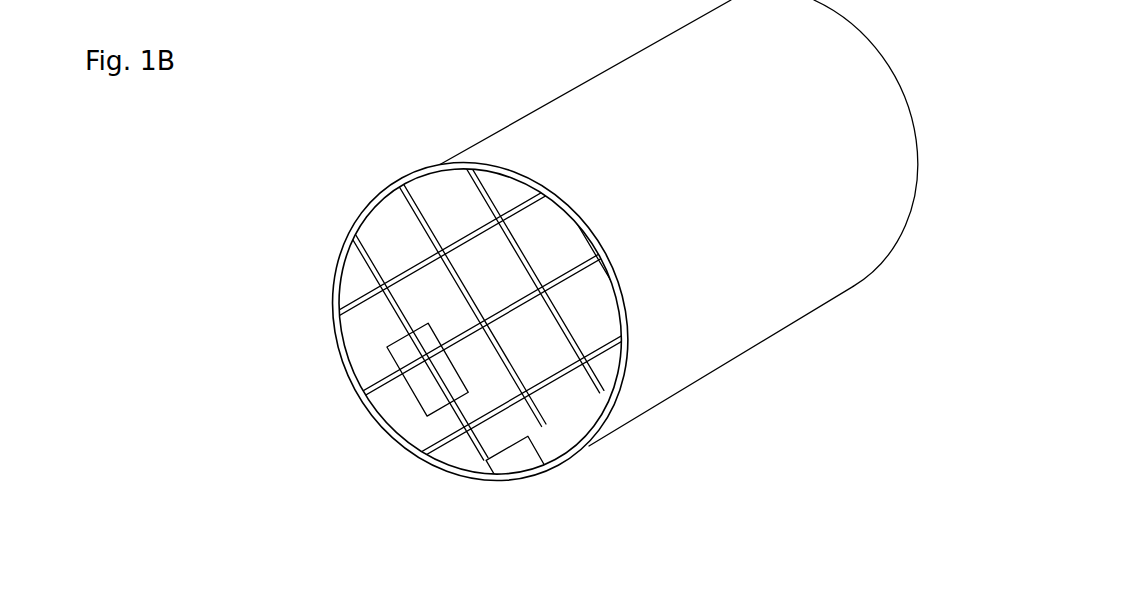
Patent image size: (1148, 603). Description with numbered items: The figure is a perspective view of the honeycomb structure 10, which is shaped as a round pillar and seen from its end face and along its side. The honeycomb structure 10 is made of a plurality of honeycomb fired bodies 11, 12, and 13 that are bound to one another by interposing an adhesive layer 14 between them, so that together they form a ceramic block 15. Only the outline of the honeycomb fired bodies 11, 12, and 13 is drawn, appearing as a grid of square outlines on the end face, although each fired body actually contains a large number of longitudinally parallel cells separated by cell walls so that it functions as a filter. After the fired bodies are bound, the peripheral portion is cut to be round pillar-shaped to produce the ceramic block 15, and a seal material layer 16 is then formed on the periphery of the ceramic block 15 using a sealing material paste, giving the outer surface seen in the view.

The honeycomb structure 10 is at (536, 296).
The honeycomb fired body 11 is at (362, 280).
The honeycomb fired body 12 is at (577, 405).
The honeycomb fired body 13 is at (477, 380).
The adhesive layer 14 is at (428, 459).
The ceramic block 15 is at (623, 302).
The seal material layer 16 is at (623, 380).